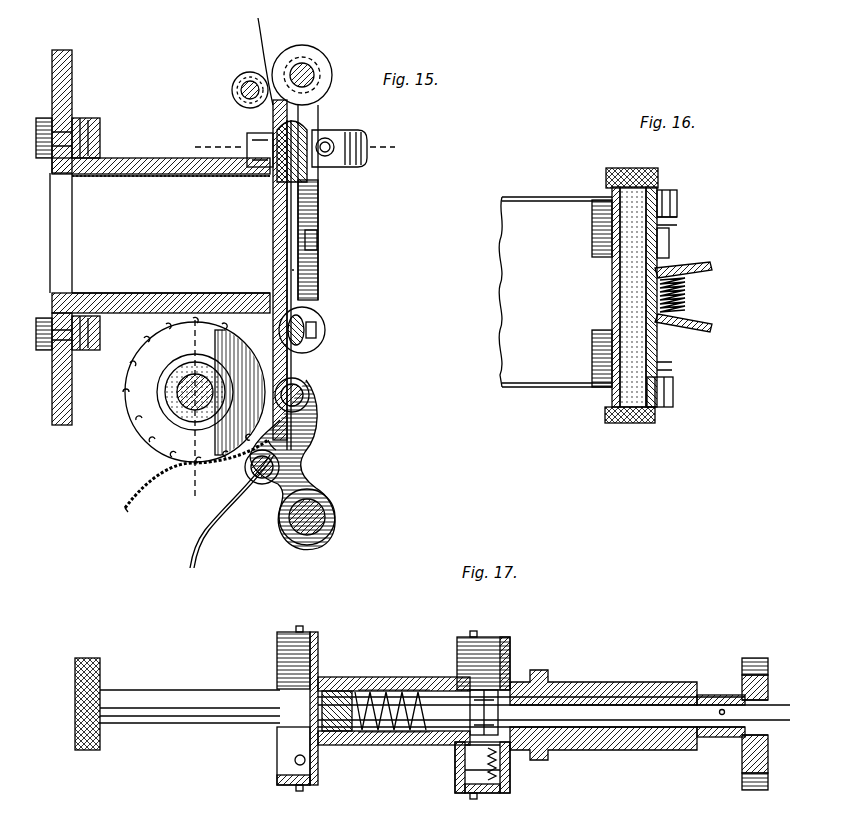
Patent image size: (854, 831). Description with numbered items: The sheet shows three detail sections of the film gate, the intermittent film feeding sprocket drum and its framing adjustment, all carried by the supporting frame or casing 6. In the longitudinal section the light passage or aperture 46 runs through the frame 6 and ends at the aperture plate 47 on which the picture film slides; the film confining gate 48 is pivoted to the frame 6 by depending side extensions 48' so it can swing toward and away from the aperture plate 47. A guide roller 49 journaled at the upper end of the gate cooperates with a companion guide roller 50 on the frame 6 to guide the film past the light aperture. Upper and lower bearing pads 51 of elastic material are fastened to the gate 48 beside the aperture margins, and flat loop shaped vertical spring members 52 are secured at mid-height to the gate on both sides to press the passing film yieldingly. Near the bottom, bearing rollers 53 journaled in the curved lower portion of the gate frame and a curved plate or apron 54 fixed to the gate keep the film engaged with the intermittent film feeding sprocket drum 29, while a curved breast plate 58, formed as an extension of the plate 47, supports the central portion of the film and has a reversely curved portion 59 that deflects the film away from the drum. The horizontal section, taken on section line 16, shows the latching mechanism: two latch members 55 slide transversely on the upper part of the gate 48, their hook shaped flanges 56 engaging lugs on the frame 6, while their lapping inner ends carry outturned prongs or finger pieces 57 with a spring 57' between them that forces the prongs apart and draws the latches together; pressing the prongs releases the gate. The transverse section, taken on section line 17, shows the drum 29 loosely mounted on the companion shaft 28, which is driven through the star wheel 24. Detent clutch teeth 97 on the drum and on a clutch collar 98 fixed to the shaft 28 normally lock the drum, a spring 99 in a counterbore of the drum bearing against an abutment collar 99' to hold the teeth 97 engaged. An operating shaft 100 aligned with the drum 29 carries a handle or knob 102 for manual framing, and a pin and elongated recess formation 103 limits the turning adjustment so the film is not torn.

In FIG. 15, the supporting frame or casing 6 is at (90, 122).
In FIG. 16, the supporting frame or casing 6 is at (574, 293).
In FIG. 17, the supporting frame or casing 6 is at (635, 683).
In FIG. 15, the section line 16— 16 is at (294, 147).
In FIG. 15, the section line 17— 17 is at (199, 417).
In FIG. 17, the driven member or star wheel 24 is at (750, 658).
In FIG. 15, the companion shaft 28 is at (178, 418).
In FIG. 17, the companion shaft 28 is at (572, 698).
In FIG. 15, the intermittent film feeding sprocket drum 29 is at (138, 432).
In FIG. 17, the intermittent film feeding sprocket drum 29 is at (316, 636).
In FIG. 15, the light passage or aperture 46 is at (171, 234).
In FIG. 16, the light passage or aperture 46 is at (500, 295).
In FIG. 16, the aperture plate 47 is at (670, 240).
In FIG. 15, the film confining gate 48 is at (319, 202).
In FIG. 15, the depending side extensions 48' is at (322, 509).
In FIG. 15, the guide roller 49 is at (318, 60).
In FIG. 15, the companion guide roller 50 is at (233, 87).
In FIG. 15, the bearing pads 51 is at (270, 185).
In FIG. 16, the bearing pads 51 is at (610, 295).
In FIG. 15, the vertical spring members 52 is at (270, 243).
In FIG. 16, the vertical spring members 52 is at (612, 210).
In FIG. 15, the bearing rollers 53 is at (310, 400).
In FIG. 15, the curved plate or apron 54 is at (300, 440).
In FIG. 15, the latch members 55 is at (318, 134).
In FIG. 16, the latch members 55 is at (677, 222).
In FIG. 16, the hook shaped flanges 56 is at (630, 168).
In FIG. 15, the outturned prongs or finger pieces 57 is at (319, 156).
In FIG. 16, the outturned prongs or finger pieces 57 is at (710, 297).
In FIG. 15, the spring 57' is at (362, 132).
In FIG. 16, the spring 57' is at (687, 295).
In FIG. 15, the curved breast plate 58 is at (262, 432).
In FIG. 15, the reversely curved portion 59 is at (128, 512).
In FIG. 15, the detent clutch teeth 97 is at (272, 272).
In FIG. 17, the detent clutch teeth 97 is at (488, 800).
In FIG. 17, the clutch collar 98 is at (506, 773).
In FIG. 15, the spring 99 is at (178, 380).
In FIG. 17, the spring 99 is at (392, 737).
In FIG. 17, the abutment collar 99' is at (394, 726).
In FIG. 17, the operating shaft 100 is at (180, 692).
In FIG. 17, the handle or knob 102 is at (92, 658).
In FIG. 17, the pin and elongated recess formation 103 is at (470, 744).